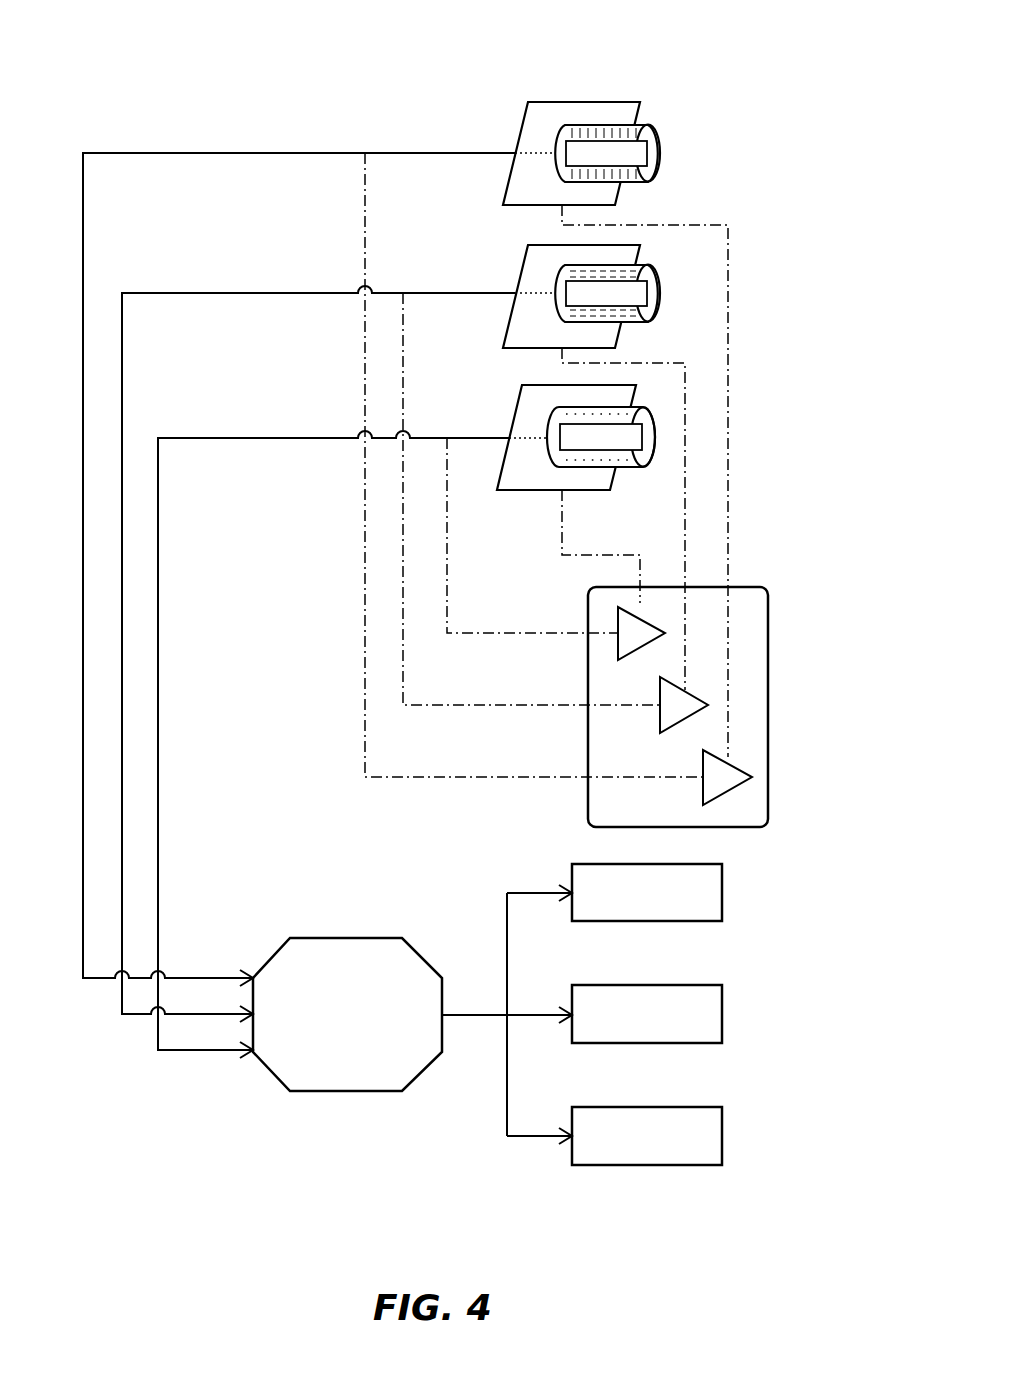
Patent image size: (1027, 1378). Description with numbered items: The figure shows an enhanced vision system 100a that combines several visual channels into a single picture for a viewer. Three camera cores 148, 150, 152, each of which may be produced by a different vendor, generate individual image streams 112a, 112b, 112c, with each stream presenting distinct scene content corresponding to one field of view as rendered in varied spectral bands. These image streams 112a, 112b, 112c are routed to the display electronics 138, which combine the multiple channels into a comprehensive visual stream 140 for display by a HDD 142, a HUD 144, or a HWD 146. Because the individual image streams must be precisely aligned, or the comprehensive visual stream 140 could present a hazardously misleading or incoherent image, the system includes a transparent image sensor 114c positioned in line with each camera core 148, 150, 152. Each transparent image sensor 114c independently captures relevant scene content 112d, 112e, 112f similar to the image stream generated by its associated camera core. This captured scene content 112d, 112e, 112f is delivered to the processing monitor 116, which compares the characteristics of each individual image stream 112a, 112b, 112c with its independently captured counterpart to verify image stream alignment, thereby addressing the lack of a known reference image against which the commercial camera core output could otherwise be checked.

The enhanced vision system 100a is at (68, 69).
The image stream 112a is at (380, 150).
The image stream 112b is at (428, 290).
The image stream 112c is at (472, 436).
The scene content 112d is at (733, 226).
The scene content 112e is at (634, 360).
The scene content 112f is at (580, 553).
The transparent image sensor 114c is at (535, 123).
The processing monitor 116 is at (770, 705).
The display electronics 138 is at (347, 1014).
The comprehensive visual stream 140 is at (485, 1017).
The HDD 142 is at (647, 892).
The HUD 144 is at (647, 1014).
The HWD 146 is at (647, 1136).
The camera core 148 is at (660, 150).
The camera core 150 is at (662, 293).
The camera core 152 is at (547, 438).